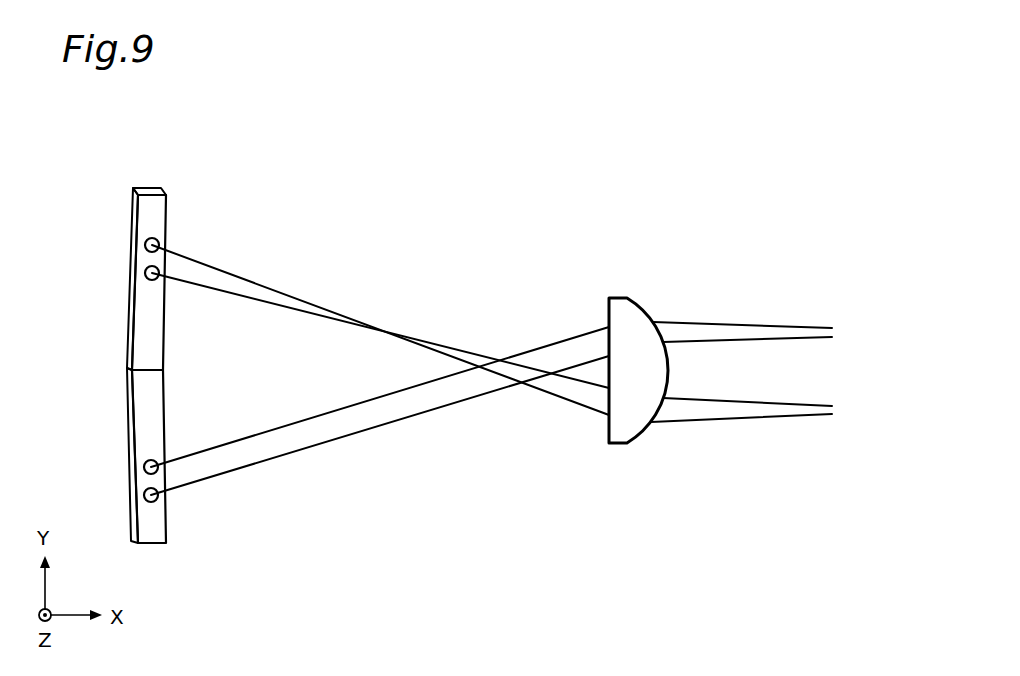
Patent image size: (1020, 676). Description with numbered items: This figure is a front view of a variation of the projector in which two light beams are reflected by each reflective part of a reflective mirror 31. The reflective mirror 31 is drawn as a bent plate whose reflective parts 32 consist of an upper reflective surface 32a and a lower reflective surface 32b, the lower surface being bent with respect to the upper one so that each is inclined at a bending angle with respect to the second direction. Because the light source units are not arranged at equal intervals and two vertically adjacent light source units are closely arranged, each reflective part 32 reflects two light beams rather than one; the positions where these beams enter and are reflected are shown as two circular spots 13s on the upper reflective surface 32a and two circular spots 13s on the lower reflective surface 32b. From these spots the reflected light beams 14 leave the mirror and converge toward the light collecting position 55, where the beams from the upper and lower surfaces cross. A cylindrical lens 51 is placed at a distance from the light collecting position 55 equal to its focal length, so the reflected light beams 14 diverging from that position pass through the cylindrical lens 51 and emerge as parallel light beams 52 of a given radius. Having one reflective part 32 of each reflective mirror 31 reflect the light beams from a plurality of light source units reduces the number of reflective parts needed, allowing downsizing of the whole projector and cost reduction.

The reflective mirror 31 is at (115, 166).
The reflective part 32 is at (50, 200).
The upper reflective surface 32a is at (148, 213).
The lower reflective surface 32b is at (148, 401).
The spot 13s is at (152, 245).
The reflected light beam 14 is at (278, 285).
The light collecting position 55 is at (508, 341).
The cylindrical lens 51 is at (623, 422).
The parallel light beam 52 is at (792, 327).